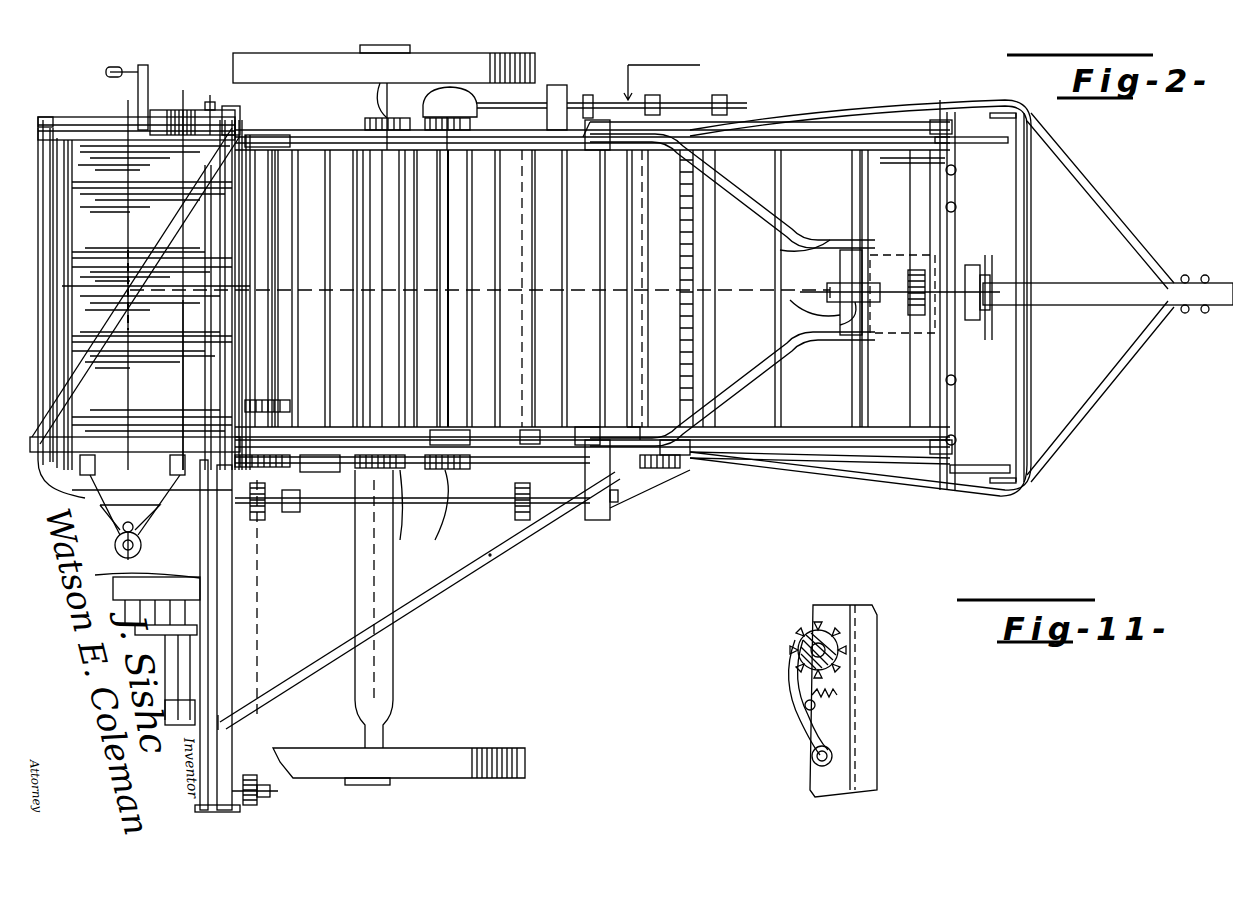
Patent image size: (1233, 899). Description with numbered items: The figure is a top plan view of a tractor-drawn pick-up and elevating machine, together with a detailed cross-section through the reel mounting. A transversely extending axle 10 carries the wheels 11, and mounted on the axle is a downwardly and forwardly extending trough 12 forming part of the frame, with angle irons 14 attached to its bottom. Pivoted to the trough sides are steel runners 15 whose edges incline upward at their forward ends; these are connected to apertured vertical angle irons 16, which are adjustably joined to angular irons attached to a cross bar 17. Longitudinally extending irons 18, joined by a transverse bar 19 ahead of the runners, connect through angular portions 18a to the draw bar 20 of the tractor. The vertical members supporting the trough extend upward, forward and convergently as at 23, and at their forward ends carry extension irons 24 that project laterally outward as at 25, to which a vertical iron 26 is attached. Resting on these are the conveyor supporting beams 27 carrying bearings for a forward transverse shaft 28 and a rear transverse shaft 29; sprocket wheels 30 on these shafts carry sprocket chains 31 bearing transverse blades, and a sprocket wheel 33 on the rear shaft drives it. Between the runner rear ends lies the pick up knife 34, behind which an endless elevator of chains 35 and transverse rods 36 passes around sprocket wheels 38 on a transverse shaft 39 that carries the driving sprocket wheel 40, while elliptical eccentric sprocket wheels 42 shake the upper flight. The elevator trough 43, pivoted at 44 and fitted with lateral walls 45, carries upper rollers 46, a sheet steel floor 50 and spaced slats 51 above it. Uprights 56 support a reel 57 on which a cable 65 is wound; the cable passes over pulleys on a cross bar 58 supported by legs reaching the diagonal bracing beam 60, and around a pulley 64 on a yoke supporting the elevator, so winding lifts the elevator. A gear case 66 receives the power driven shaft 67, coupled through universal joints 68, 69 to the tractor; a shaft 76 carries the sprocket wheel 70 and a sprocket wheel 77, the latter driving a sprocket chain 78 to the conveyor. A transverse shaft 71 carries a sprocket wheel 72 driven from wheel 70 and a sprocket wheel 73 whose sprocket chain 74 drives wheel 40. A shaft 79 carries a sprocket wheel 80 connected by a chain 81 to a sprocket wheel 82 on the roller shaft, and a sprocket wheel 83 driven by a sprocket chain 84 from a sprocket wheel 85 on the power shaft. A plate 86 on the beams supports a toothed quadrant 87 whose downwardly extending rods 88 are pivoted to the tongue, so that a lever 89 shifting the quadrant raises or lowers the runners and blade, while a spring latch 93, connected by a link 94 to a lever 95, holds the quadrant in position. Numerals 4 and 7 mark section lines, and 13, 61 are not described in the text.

In FIG. 2, the machine axis / section line 4 is at (197, 297).
In FIG. 2, the section line 7 is at (122, 116).
In FIG. 2, the axle 10 is at (380, 670).
In FIG. 2, the wheels 11 is at (163, 88).
In FIG. 2, the trough 12 is at (432, 505).
In FIG. 2, the roller 13 is at (430, 288).
In FIG. 2, the angle irons 14 is at (495, 455).
In FIG. 2, the steel runners 15 is at (1000, 134).
In FIG. 2, the vertical angle irons 16 is at (960, 118).
In FIG. 2, the cross bar 17 is at (962, 335).
In FIG. 2, the longitudinally extending irons 18 is at (905, 106).
In FIG. 2, the angular portions 18a is at (1095, 200).
In FIG. 2, the transverse bar 19 is at (1028, 388).
In FIG. 2, the draw bar 20 is at (1143, 283).
In FIG. 2, the upward and forward extensions of vertical members 23 is at (740, 190).
In FIG. 2, the extension irons 24 is at (890, 252).
In FIG. 2, the laterally projecting portions 25 is at (958, 212).
In FIG. 2, the vertical iron 26 is at (956, 165).
In FIG. 2, the conveyor supporting beams 27 is at (803, 130).
In FIG. 2, the transverse shaft 28 is at (905, 390).
In FIG. 2, the transverse shaft 29 is at (665, 244).
In FIG. 2, the sprocket wheels 30 is at (612, 427).
In FIG. 2, the sprocket chains 31 is at (830, 160).
In FIG. 2, the sprocket wheel 33 is at (652, 470).
In FIG. 2, the pick up knife 34 is at (715, 320).
In FIG. 2, the chains 35 is at (534, 428).
In FIG. 2, the transverse rods 36 is at (548, 270).
In FIG. 2, the sprocket wheels 38 is at (283, 150).
In FIG. 2, the transverse shaft 39 is at (300, 320).
In FIG. 2, the driving sprocket wheel 40 is at (318, 498).
In FIG. 2, the eccentric sprocket wheels 42 is at (592, 150).
In FIG. 2, the elevator trough 43 is at (40, 262).
In FIG. 2, the pivot 44 is at (78, 100).
In FIG. 2, the lateral walls 45 is at (75, 380).
In FIG. 2, the upper rollers 46 is at (212, 812).
In FIG. 2, the sheet steel floor 50 is at (144, 294).
In FIG. 2, the spaced slats 51 is at (220, 638).
In FIG. 2, the uprights 56 is at (236, 120).
In FIG. 11, the uprights 56 is at (843, 702).
In FIG. 2, the reel 57 is at (210, 95).
In FIG. 11, the reel 57 is at (828, 635).
In FIG. 2, the cross bar 58 is at (87, 455).
In FIG. 2, the diagonal bracing beam 60 is at (455, 580).
In FIG. 2, the diagonal brace 61 is at (170, 222).
In FIG. 2, the pulley 64 is at (143, 548).
In FIG. 2, the cable 65 is at (172, 396).
In FIG. 2, the gear case 66 is at (442, 100).
In FIG. 2, the power driven shaft 67 is at (603, 100).
In FIG. 2, the universal joint 68 is at (652, 98).
In FIG. 2, the universal joint 69 is at (722, 100).
In FIG. 2, the sprocket wheel 70 is at (485, 110).
In FIG. 2, the transverse shaft 71 is at (380, 172).
In FIG. 2, the sprocket wheel 72 is at (400, 110).
In FIG. 2, the sprocket wheel 73 is at (410, 509).
In FIG. 2, the sprocket chain 74 is at (345, 505).
In FIG. 2, the shaft 76 is at (447, 318).
In FIG. 2, the sprocket wheel 77 is at (448, 468).
In FIG. 2, the sprocket chain 78 is at (592, 522).
In FIG. 2, the shaft 79 is at (460, 505).
In FIG. 2, the sprocket wheel 80 is at (280, 510).
In FIG. 2, the chain 81 is at (265, 652).
In FIG. 2, the sprocket wheel 82 is at (270, 805).
In FIG. 2, the sprocket wheel 83 is at (522, 525).
In FIG. 2, the sprocket chain 84 is at (522, 206).
In FIG. 2, the sprocket wheel 85 is at (552, 80).
In FIG. 2, the plate 86 is at (880, 283).
In FIG. 2, the quadrant 87 is at (925, 290).
In FIG. 2, the downwardly extending rods 88 is at (990, 272).
In FIG. 2, the lever 89 is at (935, 262).
In FIG. 2, the latch 93 is at (828, 292).
In FIG. 2, the link 94 is at (800, 290).
In FIG. 2, the lever 95 is at (865, 335).